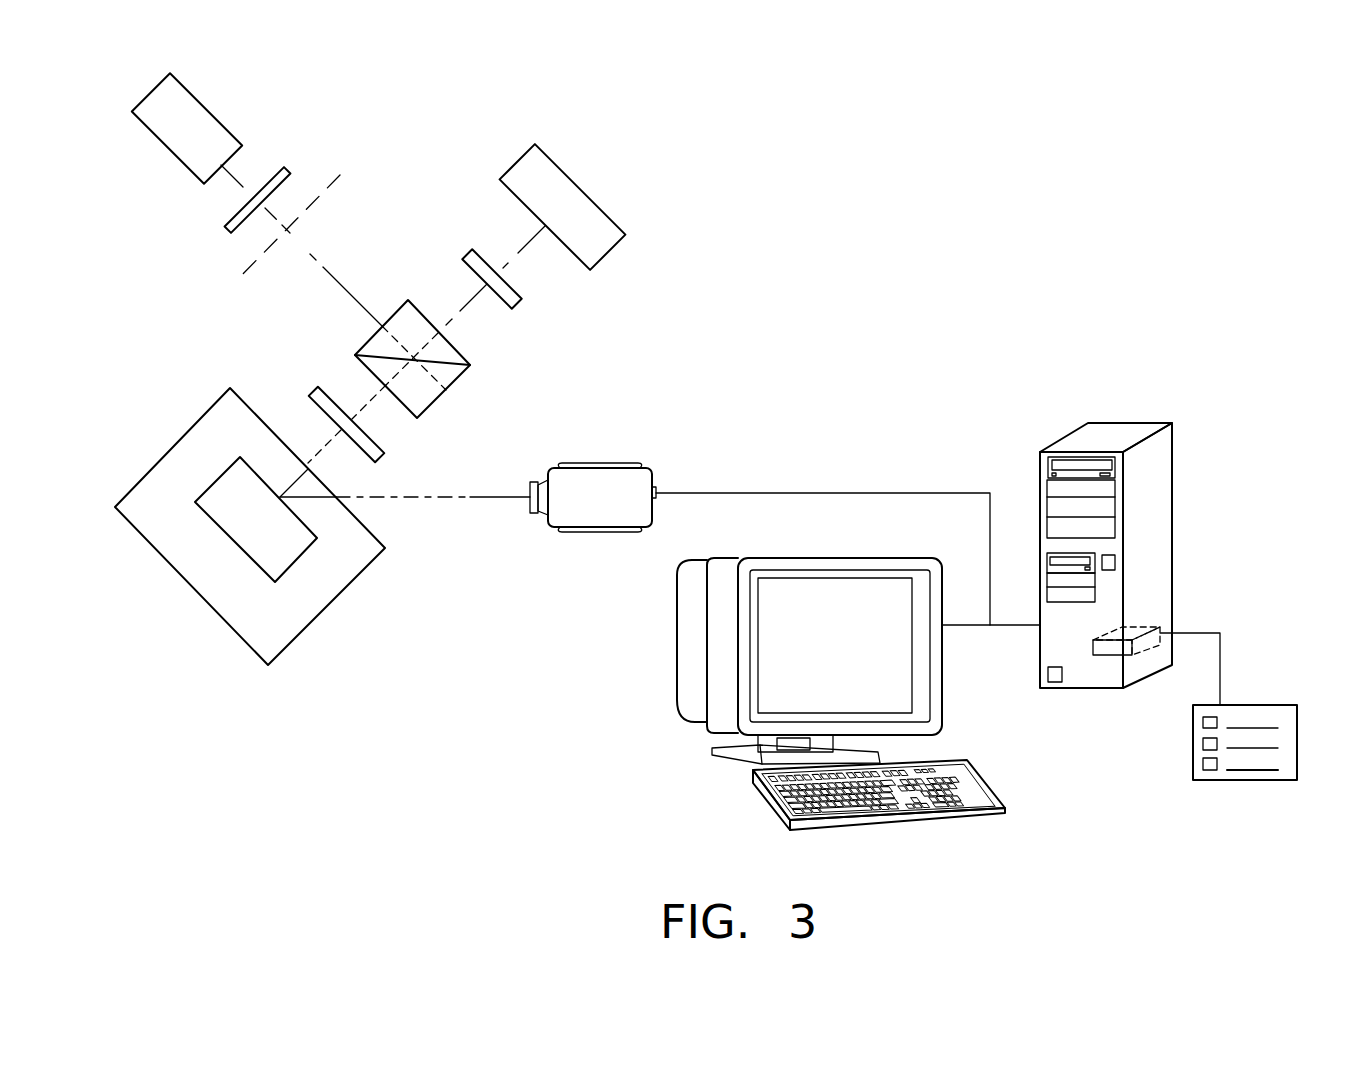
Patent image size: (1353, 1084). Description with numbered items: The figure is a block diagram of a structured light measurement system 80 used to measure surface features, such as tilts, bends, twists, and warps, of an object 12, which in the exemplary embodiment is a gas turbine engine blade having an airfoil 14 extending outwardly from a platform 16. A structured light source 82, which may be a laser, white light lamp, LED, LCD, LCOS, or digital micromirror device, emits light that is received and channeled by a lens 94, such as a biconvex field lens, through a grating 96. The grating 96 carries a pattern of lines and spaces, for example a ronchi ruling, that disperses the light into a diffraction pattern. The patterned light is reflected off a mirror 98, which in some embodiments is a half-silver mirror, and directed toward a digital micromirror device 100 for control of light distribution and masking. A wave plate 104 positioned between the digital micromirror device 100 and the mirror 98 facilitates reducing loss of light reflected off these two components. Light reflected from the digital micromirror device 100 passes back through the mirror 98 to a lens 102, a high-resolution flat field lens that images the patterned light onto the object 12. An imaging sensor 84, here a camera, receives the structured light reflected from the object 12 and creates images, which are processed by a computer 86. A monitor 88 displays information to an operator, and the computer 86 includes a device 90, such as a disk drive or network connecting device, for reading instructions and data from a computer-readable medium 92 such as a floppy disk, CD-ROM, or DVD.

The object 12 is at (209, 368).
The airfoil 14 is at (287, 545).
The platform 16 is at (282, 633).
The structured light measurement system 80 is at (737, 210).
The structured light source 82 is at (204, 99).
The imaging sensor 84 is at (597, 463).
The computer 86 is at (1067, 438).
The monitor 88 is at (676, 642).
The device 90 is at (1112, 655).
The computer-readable medium 92 is at (1260, 705).
The lens 94 is at (277, 167).
The grating 96 is at (316, 199).
The mirror 98 is at (460, 385).
The digital micromirror device 100 is at (514, 165).
The lens 102 is at (380, 462).
The wave plate 104 is at (520, 303).